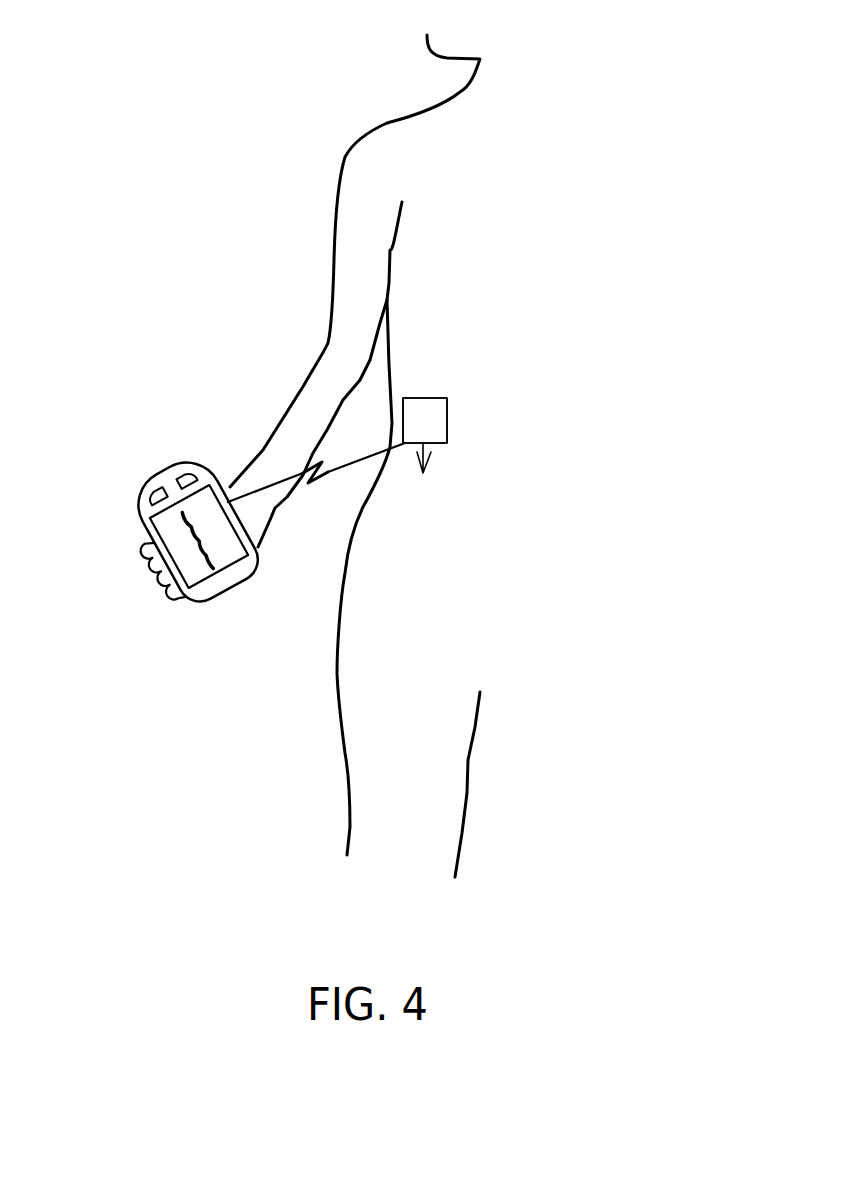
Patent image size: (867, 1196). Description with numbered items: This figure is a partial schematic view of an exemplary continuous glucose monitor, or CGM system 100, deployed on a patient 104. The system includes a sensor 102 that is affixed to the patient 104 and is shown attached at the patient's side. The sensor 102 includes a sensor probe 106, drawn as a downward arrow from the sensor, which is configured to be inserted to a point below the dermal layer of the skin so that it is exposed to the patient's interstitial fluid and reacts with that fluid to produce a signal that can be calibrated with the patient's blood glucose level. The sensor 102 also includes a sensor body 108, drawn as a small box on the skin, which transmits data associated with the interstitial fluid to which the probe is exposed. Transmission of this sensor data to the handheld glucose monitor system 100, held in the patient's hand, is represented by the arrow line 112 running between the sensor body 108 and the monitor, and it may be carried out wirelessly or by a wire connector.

The CGM system 100 is at (137, 517).
The sensor 102 is at (473, 370).
The patient 104 is at (353, 115).
The sensor probe 106 is at (425, 475).
The sensor body 108 is at (447, 430).
The arrow line 112 is at (282, 478).